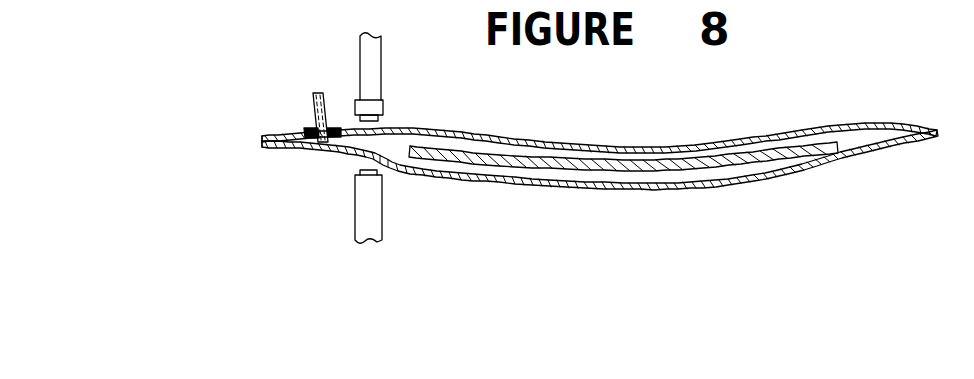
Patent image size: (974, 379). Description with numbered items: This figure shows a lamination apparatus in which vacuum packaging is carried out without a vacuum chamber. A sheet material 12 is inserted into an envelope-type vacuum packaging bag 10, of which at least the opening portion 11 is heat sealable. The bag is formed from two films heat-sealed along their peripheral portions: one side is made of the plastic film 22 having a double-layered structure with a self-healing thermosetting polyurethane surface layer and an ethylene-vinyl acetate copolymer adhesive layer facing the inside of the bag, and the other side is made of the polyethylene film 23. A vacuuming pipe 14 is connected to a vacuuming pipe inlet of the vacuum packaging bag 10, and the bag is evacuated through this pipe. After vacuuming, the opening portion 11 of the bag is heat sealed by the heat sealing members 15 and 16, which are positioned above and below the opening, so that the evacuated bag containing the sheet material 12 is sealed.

The vacuum packaging bag 10 is at (600, 157).
The opening portion 11 is at (378, 148).
The sheet material 12 is at (663, 171).
The vacuuming pipe 14 is at (312, 112).
The heat sealing member 15 is at (368, 70).
The heat sealing member 16 is at (372, 200).
The plastic film 22 is at (712, 147).
The polyethylene film 23 is at (672, 190).